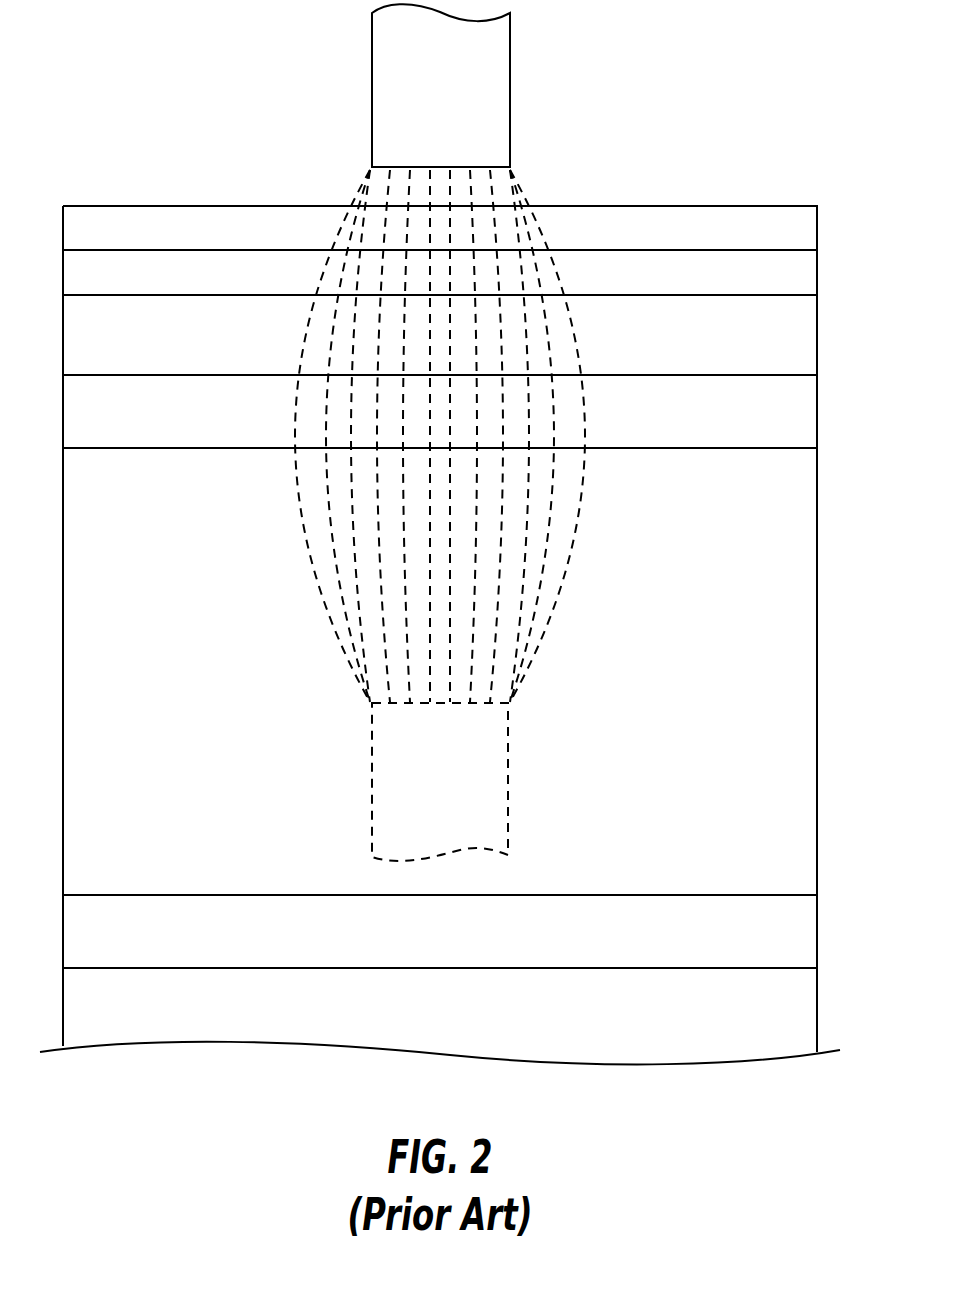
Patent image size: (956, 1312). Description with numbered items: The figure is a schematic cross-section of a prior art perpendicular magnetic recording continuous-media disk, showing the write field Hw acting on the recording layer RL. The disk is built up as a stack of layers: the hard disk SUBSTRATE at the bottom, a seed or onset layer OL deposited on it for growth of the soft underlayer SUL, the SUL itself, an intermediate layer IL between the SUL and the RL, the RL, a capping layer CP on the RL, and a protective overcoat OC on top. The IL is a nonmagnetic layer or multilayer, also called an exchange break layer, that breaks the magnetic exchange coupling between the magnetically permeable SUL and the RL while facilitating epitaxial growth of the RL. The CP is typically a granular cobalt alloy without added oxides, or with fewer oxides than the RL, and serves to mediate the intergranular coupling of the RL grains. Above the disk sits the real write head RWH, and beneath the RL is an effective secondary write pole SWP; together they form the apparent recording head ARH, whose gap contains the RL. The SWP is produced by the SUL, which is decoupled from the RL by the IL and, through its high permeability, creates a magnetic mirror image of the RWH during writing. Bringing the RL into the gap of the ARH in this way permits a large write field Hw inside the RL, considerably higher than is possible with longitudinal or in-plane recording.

The apparent recording head ARH is at (352, 714).
The real write head RWH is at (441, 85).
The write field Hw is at (567, 340).
The secondary write pole SWP is at (440, 782).
The protective overcoat OC is at (440, 230).
The capping layer CP is at (440, 271).
The recording layer RL is at (440, 341).
The intermediate layer IL is at (440, 421).
The soft underlayer SUL is at (440, 681).
The onset layer OL is at (440, 940).
The hard disk substrate SUBSTRATE is at (169, 1018).